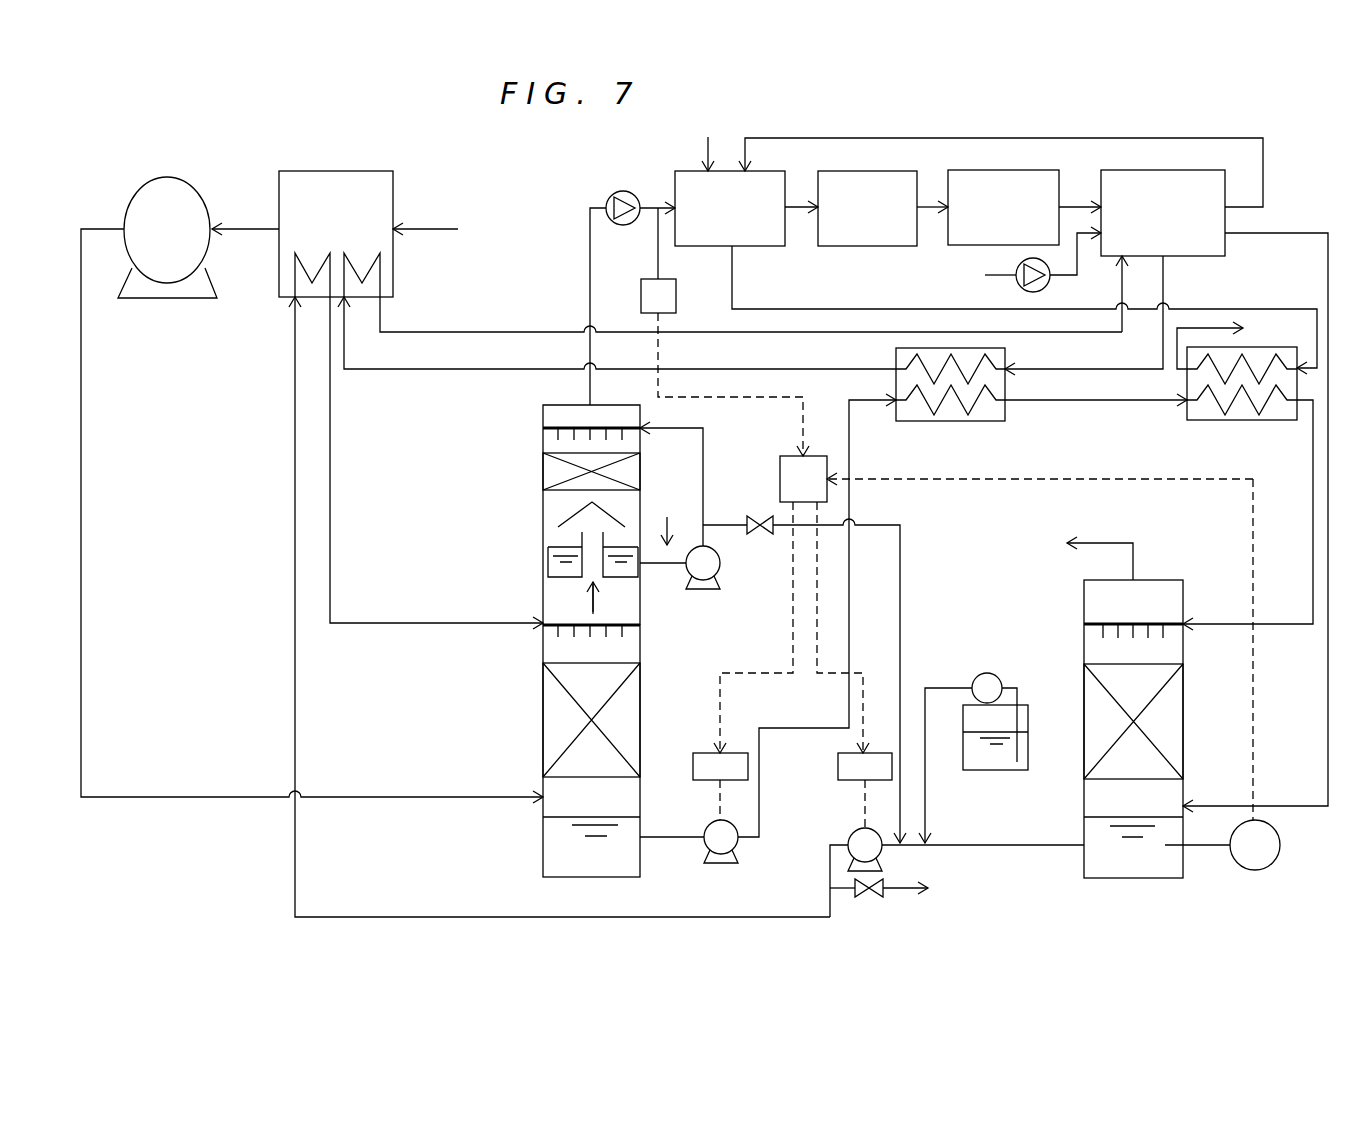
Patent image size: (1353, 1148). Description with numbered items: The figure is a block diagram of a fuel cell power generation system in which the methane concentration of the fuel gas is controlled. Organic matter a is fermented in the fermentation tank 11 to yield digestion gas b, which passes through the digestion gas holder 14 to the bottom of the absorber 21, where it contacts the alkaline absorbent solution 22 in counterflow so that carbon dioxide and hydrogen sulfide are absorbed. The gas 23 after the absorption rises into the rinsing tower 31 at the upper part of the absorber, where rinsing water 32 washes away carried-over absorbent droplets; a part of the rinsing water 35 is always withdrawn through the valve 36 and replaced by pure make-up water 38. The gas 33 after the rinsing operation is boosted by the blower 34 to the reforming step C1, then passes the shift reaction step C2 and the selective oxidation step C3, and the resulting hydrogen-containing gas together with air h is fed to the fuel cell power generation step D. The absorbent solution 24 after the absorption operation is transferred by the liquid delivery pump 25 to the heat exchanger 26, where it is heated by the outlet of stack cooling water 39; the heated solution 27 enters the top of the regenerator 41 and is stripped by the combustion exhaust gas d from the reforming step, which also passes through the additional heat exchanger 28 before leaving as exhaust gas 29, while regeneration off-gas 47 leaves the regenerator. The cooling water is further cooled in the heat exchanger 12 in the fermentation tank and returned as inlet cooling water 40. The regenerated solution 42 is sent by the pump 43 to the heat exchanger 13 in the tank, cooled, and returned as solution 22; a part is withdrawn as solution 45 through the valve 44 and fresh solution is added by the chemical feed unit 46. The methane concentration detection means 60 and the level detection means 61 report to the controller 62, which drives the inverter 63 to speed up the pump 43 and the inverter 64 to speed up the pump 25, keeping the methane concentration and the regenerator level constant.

The fermentation tank 11 is at (393, 188).
The heat exchanger 12 is at (372, 257).
The heat exchanger 13 is at (303, 258).
The digestion gas holder 14 is at (181, 326).
The absorber 21 is at (643, 904).
The alkaline absorbent solution 22 is at (456, 620).
The gas after the absorption 23 is at (587, 602).
The alkaline absorbent solution after the absorption operation 24 is at (675, 835).
The liquid delivery pump 25 is at (723, 846).
The heat exchanger 26 is at (955, 421).
The heated alkaline absorbent solution 27 is at (1205, 620).
The heat exchanger 28 is at (1243, 420).
The combustion exhaust gas after the heat exchange 29 is at (1228, 344).
The rinsing tower 31 is at (535, 487).
The rinsing water 32 is at (690, 428).
The gas after the rinsing operation 33 is at (590, 268).
The blower 34 is at (624, 226).
The rinsing water 35 is at (652, 566).
The valve 36 is at (759, 516).
The make-up water 38 is at (669, 518).
The outlet of stack cooling water 39 is at (1165, 282).
The inlet of cooling water 40 is at (1122, 282).
The regenerator 41 is at (1190, 931).
The regenerated alkaline absorbent solution 42 is at (1013, 848).
The liquid delivery pump 43 is at (858, 833).
The valve 44 is at (878, 897).
The withdrawn solution 45 is at (923, 892).
The chemical feed unit 46 is at (1060, 819).
The regeneration off-gas 47 is at (1086, 555).
The methane concentration detection means 60 is at (676, 298).
The level detection means 61 is at (1253, 870).
The controller 62 is at (820, 456).
The inverter 63 is at (840, 758).
The inverter 64 is at (708, 753).
The reforming step C1 is at (770, 171).
The shift reaction step C2 is at (898, 171).
The selective oxidation step C3 is at (1042, 170).
The fuel cell power generation step D is at (1205, 170).
The organic matter a is at (425, 215).
The digestion gas b is at (245, 215).
The combustion exhaust gas d is at (808, 306).
The air h is at (1034, 263).